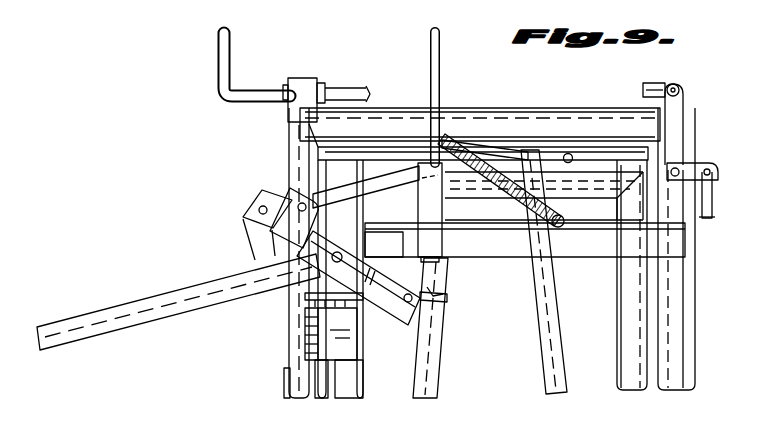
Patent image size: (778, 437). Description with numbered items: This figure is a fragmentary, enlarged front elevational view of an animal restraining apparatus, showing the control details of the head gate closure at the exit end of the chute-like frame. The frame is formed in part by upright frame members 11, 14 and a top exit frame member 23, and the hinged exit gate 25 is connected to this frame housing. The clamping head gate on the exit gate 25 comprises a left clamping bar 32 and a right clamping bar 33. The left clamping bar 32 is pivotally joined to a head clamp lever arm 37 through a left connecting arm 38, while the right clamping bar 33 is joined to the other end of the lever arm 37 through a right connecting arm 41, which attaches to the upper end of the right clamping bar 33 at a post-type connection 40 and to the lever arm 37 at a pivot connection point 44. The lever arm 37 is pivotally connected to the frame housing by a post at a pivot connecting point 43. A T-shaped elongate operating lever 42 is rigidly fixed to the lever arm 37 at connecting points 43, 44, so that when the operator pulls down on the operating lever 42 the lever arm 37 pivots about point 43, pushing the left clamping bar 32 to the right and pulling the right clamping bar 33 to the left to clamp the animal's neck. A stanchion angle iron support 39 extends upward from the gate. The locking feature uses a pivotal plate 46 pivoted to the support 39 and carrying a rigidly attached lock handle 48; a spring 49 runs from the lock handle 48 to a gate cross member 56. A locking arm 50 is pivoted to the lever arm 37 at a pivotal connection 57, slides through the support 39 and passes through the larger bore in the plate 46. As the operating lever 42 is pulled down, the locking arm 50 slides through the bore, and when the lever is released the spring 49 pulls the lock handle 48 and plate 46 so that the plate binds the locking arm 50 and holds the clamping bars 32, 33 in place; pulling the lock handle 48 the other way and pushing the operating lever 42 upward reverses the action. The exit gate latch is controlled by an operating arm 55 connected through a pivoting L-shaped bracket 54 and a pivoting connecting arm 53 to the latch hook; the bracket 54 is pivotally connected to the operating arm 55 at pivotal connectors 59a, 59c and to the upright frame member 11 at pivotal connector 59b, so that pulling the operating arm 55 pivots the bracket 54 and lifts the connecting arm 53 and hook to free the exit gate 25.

The upright frame member 11 is at (688, 348).
The upright frame member 14 is at (286, 151).
The top exit frame member 23 is at (549, 114).
The exit gate 25 is at (620, 305).
The left clamping bar 32 is at (438, 386).
The right clamping bar 33 is at (543, 333).
The head clamp lever arm 37 is at (389, 308).
The left connecting arm 38 is at (448, 298).
The stanchion angle iron support 39 is at (425, 289).
The connection 40 is at (518, 152).
The right connecting arm 41 is at (392, 173).
The operating lever 42 is at (187, 316).
The pivot connecting point 43 is at (384, 244).
The pivot connection point 44 is at (248, 210).
The pivotal plate 46 is at (429, 140).
The lock handle 48 is at (439, 82).
The spring 49 is at (462, 148).
The locking arm 50 is at (370, 204).
The connecting arm 53 is at (712, 199).
The L-shaped bracket 54 is at (713, 165).
The operating arm 55 is at (219, 50).
The gate cross member 56 is at (508, 258).
The pivotal connection 57 is at (292, 191).
The pivotal connector 59a is at (718, 173).
The pivotal connector 59b is at (681, 161).
The pivotal connector 59c is at (679, 85).